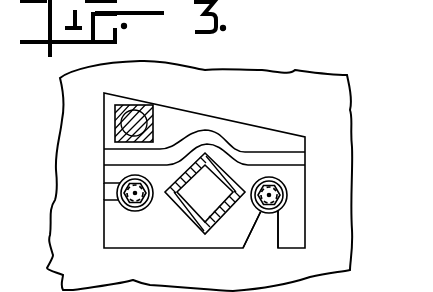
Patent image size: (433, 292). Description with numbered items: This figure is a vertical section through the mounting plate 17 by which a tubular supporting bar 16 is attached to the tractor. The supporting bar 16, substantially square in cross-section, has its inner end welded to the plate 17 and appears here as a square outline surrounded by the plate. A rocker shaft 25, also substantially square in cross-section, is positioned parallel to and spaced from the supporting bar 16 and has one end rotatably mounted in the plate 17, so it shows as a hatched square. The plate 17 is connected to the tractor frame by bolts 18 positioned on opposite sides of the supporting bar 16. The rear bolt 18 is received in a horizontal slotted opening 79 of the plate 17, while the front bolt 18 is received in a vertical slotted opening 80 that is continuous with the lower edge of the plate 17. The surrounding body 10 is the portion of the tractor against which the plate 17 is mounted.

The substrate body 10 is at (333, 110).
The plate 17 is at (242, 118).
The rocker shaft 25 is at (134, 120).
The tubular supporting bar 16 is at (182, 209).
The bolt 18 is at (287, 194).
The horizontal slotted opening 79 is at (104, 197).
The vertical slotted opening 80 is at (275, 237).